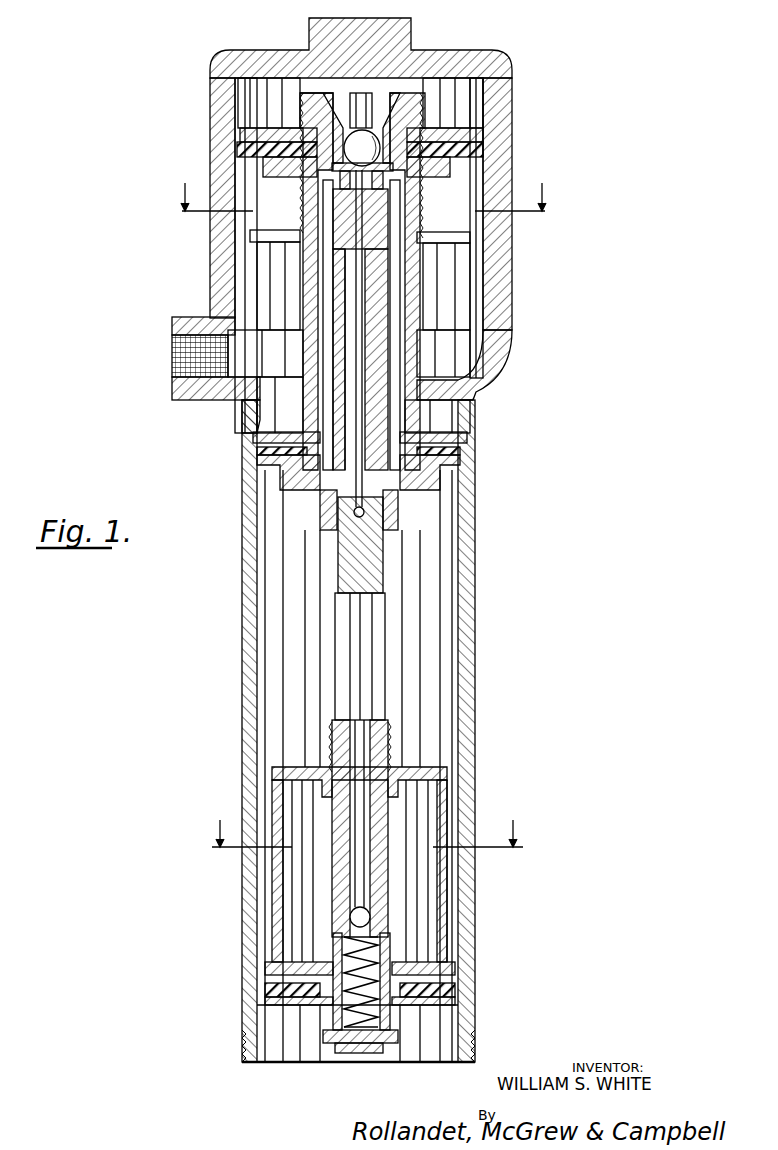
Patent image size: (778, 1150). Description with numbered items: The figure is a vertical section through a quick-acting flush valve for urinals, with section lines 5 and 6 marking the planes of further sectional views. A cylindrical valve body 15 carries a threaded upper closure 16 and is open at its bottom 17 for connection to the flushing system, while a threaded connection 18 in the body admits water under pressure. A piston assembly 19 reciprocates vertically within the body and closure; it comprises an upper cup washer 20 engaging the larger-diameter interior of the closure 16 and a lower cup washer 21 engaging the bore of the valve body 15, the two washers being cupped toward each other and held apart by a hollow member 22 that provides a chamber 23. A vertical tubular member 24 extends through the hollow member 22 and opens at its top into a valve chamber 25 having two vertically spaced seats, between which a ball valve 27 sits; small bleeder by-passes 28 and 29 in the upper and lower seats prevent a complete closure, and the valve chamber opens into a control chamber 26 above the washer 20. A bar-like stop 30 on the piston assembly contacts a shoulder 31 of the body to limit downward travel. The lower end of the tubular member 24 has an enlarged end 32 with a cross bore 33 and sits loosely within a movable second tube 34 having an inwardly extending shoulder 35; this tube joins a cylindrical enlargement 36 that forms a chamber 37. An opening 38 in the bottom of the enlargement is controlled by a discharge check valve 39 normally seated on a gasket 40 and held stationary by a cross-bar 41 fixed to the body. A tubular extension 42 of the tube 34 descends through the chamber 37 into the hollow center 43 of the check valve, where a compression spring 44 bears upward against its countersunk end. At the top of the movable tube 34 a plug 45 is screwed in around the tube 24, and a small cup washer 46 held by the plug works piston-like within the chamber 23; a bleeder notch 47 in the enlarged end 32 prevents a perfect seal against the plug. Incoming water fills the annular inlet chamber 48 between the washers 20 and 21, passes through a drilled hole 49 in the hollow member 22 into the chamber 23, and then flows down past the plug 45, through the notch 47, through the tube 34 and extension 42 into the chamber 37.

The section line 5- 5 is at (358, 186).
The section line 6- 6 is at (365, 820).
The cylindrical valve body 15 is at (473, 489).
The threaded upper closure 16 is at (512, 78).
The open bottom 17 is at (290, 1052).
The threaded connection 18 is at (177, 350).
The piston element 19 is at (470, 298).
The upper cup washer 20 is at (490, 147).
The lower cup washer 21 is at (447, 455).
The hollow member 22 is at (417, 350).
The chamber 23 is at (388, 395).
The tubular member 24 is at (370, 367).
The valve chamber 25 is at (380, 138).
The control chamber 26 is at (250, 107).
The ball valve 27 is at (355, 142).
The bleeder by-pass 28 is at (365, 122).
The bleeder by-pass 29 is at (367, 177).
The bar-like stop 30 is at (280, 232).
The shoulder 31 is at (242, 400).
The enlarged end 32 is at (368, 545).
The cross bore 33 is at (364, 516).
The movable second tube 34 is at (395, 657).
The inwardly extending shoulder 35 is at (377, 720).
The cylindrical enlargement 36 is at (450, 917).
The chamber 37 is at (302, 887).
The opening 38 is at (443, 997).
The discharge check valve 39 is at (295, 967).
The gasket 40 is at (267, 1003).
The cross-bar 41 is at (360, 1052).
The extended tubular portion 42 is at (380, 867).
The hollow center 43 is at (380, 1017).
The compression spring 44 is at (330, 1047).
The plug 45 is at (262, 447).
The small cup washer 46 is at (398, 432).
The bleeder notch 47 is at (384, 496).
The annular inlet chamber 48 is at (270, 258).
The drilled hole 49 is at (405, 267).